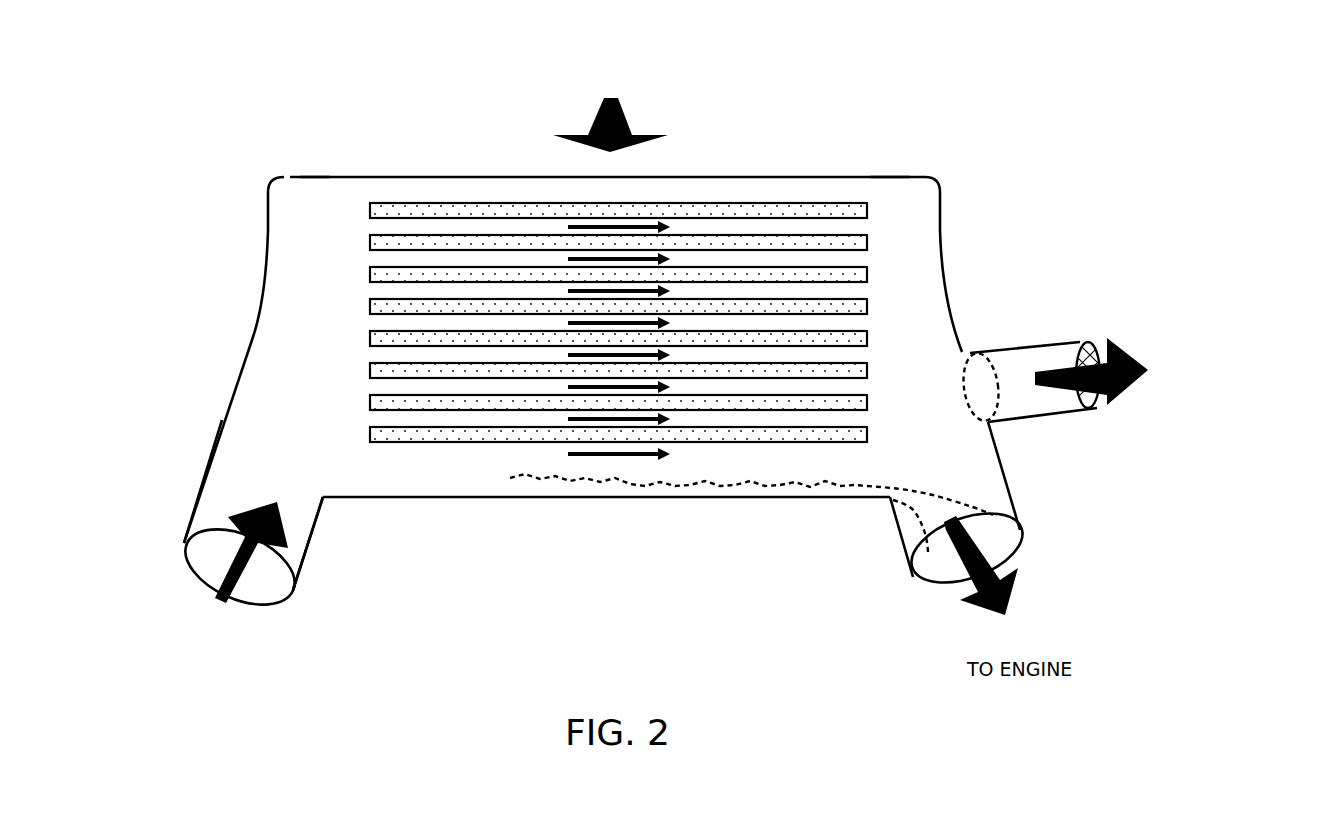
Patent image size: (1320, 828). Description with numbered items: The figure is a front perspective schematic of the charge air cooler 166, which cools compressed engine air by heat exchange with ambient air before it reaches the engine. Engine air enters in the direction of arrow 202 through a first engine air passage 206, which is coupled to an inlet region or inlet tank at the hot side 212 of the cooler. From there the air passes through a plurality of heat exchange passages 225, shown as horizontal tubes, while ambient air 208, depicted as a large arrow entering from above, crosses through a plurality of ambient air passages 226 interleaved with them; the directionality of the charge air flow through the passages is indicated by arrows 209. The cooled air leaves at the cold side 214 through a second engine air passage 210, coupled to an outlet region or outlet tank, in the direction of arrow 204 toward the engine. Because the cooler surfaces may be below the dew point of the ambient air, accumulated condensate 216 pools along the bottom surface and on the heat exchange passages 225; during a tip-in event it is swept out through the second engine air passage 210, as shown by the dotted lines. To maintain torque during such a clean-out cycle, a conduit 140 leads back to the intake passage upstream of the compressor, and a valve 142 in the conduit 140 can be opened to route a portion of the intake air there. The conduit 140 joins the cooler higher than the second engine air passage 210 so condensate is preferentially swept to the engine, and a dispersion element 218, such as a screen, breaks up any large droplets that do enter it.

The conduit 140 is at (1050, 342).
The valve 142 is at (970, 353).
The charge air cooler 166 is at (470, 176).
The arrow 202 is at (222, 598).
The arrow 204 is at (975, 505).
The first engine air passage 206 is at (251, 536).
The ambient air 208 is at (567, 135).
The arrows 209 is at (550, 343).
The second engine air passage 210 is at (930, 511).
The hot side 212 is at (307, 166).
The cold side 214 is at (890, 166).
The accumulated condensate 216 is at (802, 488).
The dispersion element 218 is at (1100, 405).
The heat exchange passages 225 is at (362, 420).
The ambient air passages 226 is at (370, 300).